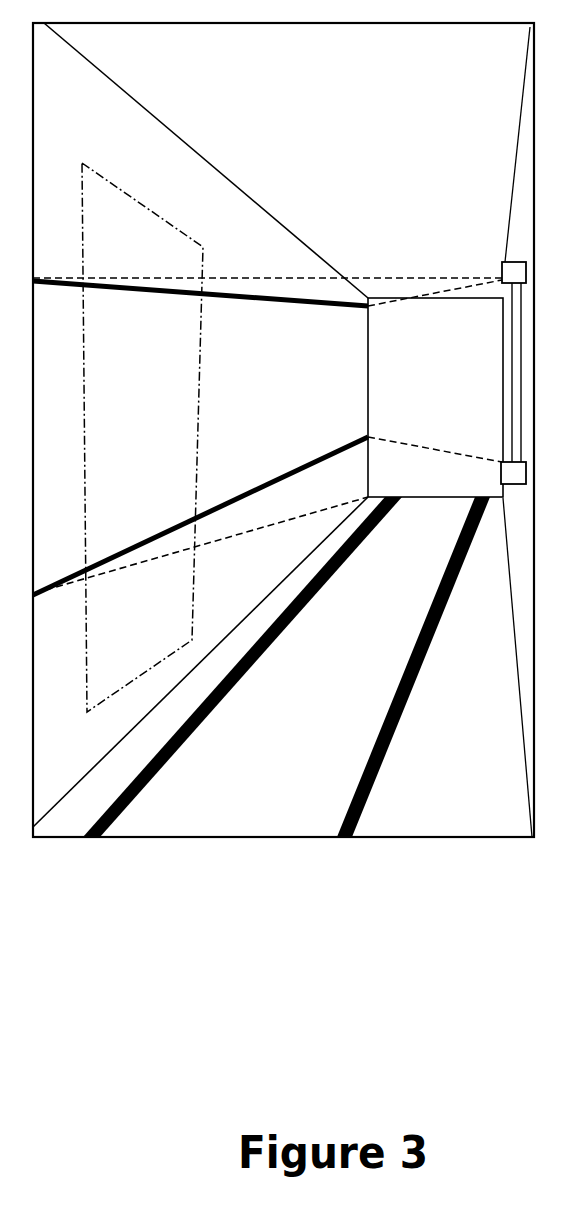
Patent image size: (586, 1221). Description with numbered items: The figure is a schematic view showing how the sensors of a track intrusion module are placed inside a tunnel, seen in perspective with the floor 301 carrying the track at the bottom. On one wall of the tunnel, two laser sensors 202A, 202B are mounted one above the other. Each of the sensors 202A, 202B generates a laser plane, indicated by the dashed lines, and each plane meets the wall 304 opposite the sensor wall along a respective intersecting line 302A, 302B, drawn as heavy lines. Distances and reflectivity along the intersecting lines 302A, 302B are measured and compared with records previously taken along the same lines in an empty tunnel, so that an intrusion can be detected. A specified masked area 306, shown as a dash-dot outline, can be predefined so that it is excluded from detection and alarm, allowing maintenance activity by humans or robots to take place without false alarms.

The floor 301 is at (302, 754).
The wall 304 is at (327, 407).
The intersecting line 302A is at (339, 308).
The intersecting line 302B is at (308, 462).
The masked area 306 is at (147, 203).
The laser sensor 202A is at (502, 272).
The laser sensor 202B is at (500, 467).